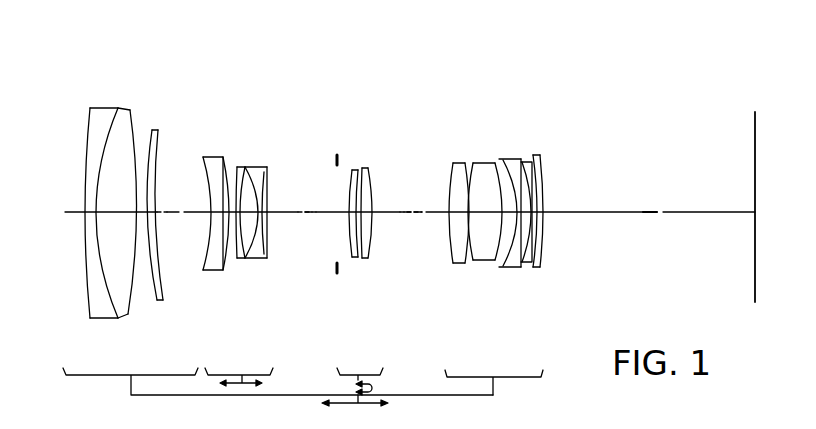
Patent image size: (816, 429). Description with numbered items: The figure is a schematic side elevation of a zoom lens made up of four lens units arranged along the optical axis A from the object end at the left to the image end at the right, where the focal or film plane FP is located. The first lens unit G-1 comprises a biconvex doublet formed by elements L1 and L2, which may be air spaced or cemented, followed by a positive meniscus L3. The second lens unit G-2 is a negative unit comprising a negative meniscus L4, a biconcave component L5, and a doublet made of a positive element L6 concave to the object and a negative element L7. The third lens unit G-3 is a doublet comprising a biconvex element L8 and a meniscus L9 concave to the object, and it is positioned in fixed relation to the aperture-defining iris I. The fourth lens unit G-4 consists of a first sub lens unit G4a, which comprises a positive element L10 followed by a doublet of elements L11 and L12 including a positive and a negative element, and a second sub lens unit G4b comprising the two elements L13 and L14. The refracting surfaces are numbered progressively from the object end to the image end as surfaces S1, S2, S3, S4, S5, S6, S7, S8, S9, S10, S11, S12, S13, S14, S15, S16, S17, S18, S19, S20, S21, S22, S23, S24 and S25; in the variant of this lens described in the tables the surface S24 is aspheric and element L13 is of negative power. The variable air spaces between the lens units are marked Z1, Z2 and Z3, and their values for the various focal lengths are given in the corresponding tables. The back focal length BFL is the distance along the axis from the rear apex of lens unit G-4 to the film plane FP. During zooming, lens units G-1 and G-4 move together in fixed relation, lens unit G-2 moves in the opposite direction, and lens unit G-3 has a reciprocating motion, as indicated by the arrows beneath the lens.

The first lens unit G-1 is at (176, 58).
The second lens unit G-2 is at (275, 58).
The third lens unit G-3 is at (398, 58).
The fourth lens unit G-4 is at (555, 58).
The first sub lens unit G4a is at (501, 340).
The second sub lens unit G4b is at (552, 340).
The lens element L1 is at (80, 225).
The lens element L2 is at (142, 237).
The positive meniscus L3 is at (178, 227).
The negative meniscus L4 is at (218, 215).
The biconcave component L5 is at (276, 222).
The positive element L6 is at (289, 236).
The negative element L7 is at (301, 230).
The biconvex element L8 is at (373, 212).
The meniscus L9 is at (394, 232).
The positive element L10 is at (452, 227).
The lens element L11 is at (535, 211).
The lens element L12 is at (562, 239).
The lens element L13 is at (572, 247).
The lens element L14 is at (601, 225).
The lens element surface S1 is at (86, 133).
The lens element surface S2 is at (112, 108).
The lens element surface S3 is at (130, 134).
The lens element surface S4 is at (158, 140).
The lens element surface S5 is at (157, 181).
The lens element surface S6 is at (205, 172).
The lens element surface S7 is at (234, 160).
The lens element surface S8 is at (238, 195).
The lens element surface S9 is at (246, 186).
The lens element surface S10 is at (256, 190).
The lens element surface S11 is at (268, 201).
The lens element surface S12 is at (270, 231).
The lens element surface S13 is at (350, 170).
The lens element surface S14 is at (364, 172).
The lens element surface S15 is at (368, 180).
The lens element surface S16 is at (372, 190).
The lens element surface S17 is at (450, 182).
The lens element surface S18 is at (472, 160).
The lens element surface S19 is at (483, 160).
The lens element surface S20 is at (505, 178).
The lens element surface S21 is at (514, 188).
The lens element surface S22 is at (522, 198).
The lens element surface S23 is at (531, 230).
The aspheric surface S24 is at (541, 240).
The lens element surface S25 is at (544, 252).
The lens unit spacing Z1 is at (170, 203).
The lens unit spacing Z2 is at (311, 205).
The lens unit spacing Z3 is at (410, 205).
The iris I is at (337, 273).
The focal plane FP is at (755, 128).
The optical axis A is at (410, 233).
The back focal length BFL is at (673, 199).